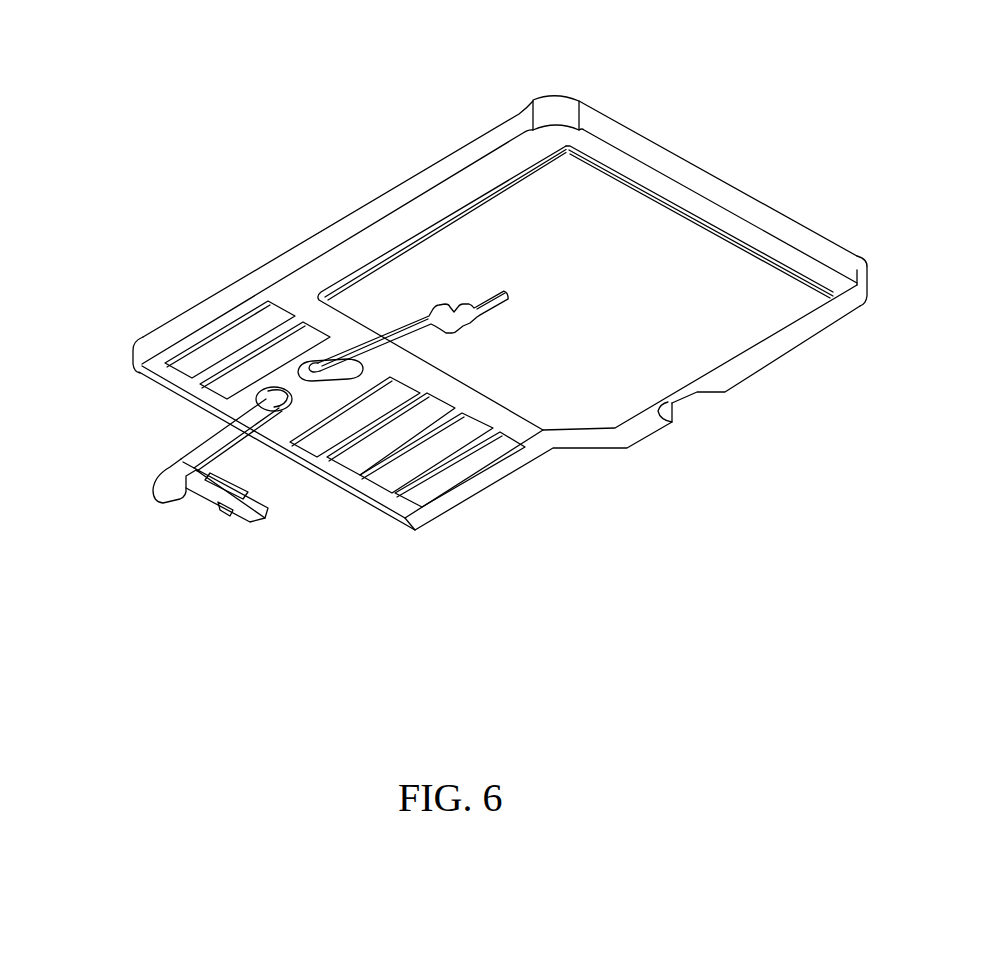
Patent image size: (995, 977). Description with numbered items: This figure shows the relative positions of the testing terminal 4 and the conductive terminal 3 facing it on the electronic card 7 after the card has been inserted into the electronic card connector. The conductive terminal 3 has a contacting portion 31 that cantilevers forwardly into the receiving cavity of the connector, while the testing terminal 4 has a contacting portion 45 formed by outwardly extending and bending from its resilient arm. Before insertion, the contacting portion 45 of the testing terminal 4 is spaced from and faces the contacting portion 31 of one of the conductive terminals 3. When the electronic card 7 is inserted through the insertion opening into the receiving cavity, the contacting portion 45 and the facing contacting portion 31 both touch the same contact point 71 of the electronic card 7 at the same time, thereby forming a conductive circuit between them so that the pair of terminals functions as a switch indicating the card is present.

The electronic card 7 is at (335, 195).
The contact point 71 is at (288, 376).
The contacting portion 45 is at (257, 397).
The testing terminal 4 is at (163, 528).
The conductive terminal 3 is at (365, 368).
The contacting portion 31 is at (318, 376).